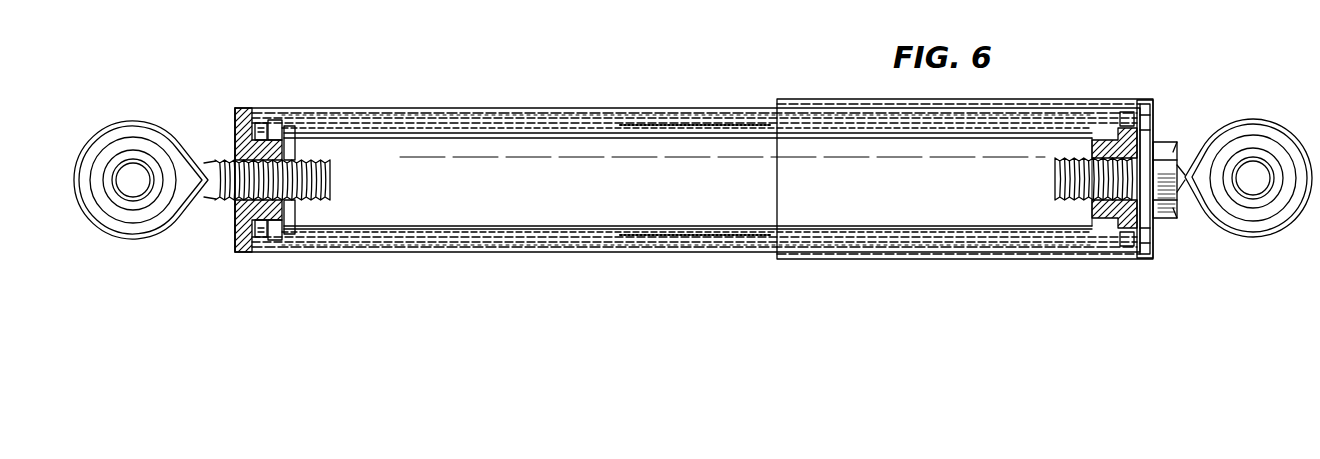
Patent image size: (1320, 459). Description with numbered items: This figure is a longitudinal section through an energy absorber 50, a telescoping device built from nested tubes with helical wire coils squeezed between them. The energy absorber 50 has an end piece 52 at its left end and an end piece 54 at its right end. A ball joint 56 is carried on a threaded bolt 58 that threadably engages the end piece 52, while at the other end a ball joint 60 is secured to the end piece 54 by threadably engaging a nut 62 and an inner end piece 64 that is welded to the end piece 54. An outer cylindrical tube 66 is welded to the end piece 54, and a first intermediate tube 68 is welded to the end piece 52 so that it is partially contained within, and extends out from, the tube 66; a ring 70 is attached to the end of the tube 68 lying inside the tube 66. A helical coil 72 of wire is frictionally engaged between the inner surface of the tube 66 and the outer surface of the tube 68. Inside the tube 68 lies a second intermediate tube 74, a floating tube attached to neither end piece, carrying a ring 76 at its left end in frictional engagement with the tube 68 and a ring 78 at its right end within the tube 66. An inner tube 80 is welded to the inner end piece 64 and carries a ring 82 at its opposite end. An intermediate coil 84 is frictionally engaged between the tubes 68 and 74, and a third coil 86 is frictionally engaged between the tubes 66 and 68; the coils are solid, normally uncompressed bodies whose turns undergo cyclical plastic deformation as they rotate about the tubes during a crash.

The energy absorber 50 is at (608, 108).
The end piece 52 is at (234, 133).
The end piece 54 is at (1150, 235).
The ball joint 56 is at (135, 126).
The threaded bolt 58 is at (218, 205).
The ball joint 60 is at (1263, 121).
The nut 62 is at (1170, 219).
The inner end piece 64 is at (1093, 228).
The outer cylindrical tube 66 is at (807, 100).
The first intermediate tube 68 is at (437, 108).
The ring 70 is at (1122, 100).
The helical coil 72 is at (962, 102).
The second intermediate tube 74 is at (375, 108).
The ring 76 is at (254, 108).
The ring 78 is at (1152, 112).
The inner tube 80 is at (522, 108).
The ring 82 is at (287, 108).
The intermediate coil 84 is at (685, 108).
The third coil 86 is at (738, 127).